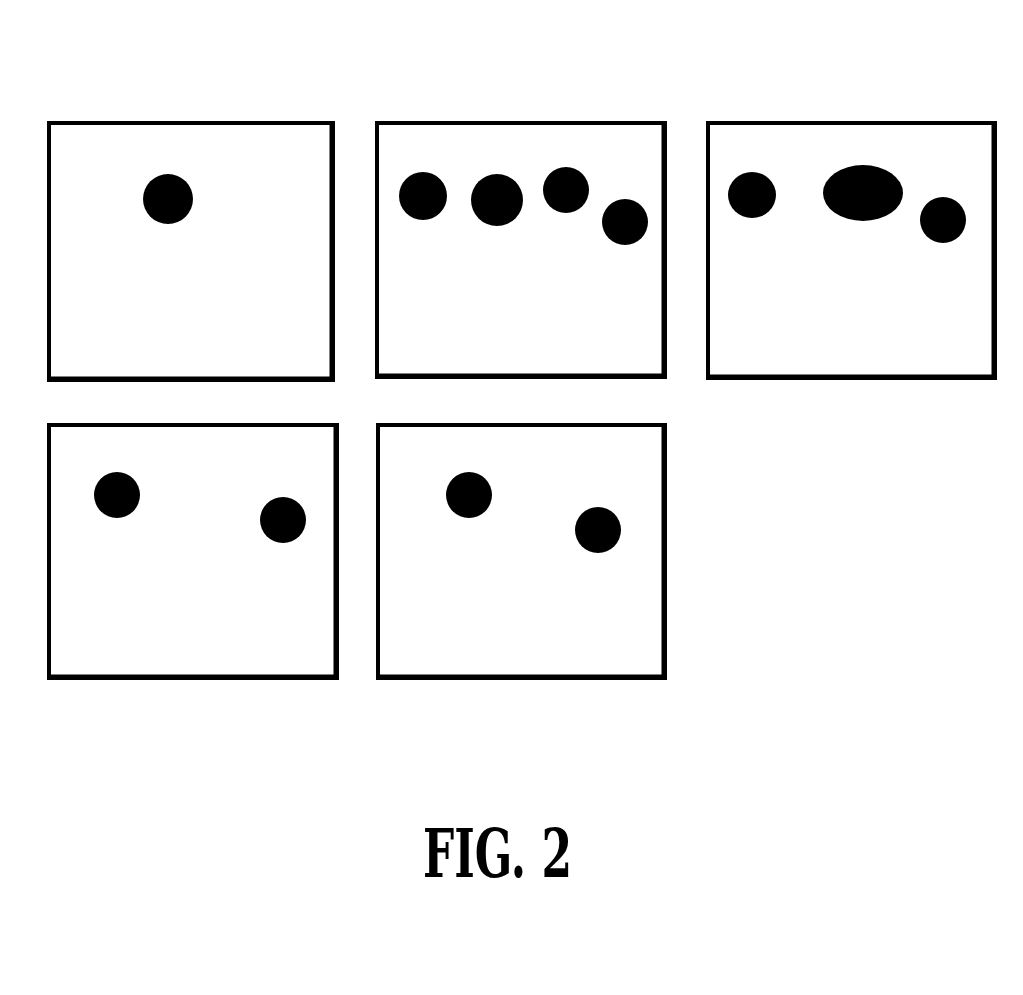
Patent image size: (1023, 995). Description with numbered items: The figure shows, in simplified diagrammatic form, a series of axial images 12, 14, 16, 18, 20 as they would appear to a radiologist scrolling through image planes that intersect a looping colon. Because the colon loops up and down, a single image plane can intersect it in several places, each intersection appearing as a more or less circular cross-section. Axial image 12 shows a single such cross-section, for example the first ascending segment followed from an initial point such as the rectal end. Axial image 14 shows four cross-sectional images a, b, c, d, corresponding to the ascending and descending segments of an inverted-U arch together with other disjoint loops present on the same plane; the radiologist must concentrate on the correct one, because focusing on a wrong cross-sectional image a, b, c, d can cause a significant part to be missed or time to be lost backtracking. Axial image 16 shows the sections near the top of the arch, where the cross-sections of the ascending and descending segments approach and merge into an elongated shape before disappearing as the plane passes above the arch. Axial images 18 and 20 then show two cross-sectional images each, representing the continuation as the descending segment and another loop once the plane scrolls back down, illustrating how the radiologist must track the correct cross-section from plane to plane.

The axial image 12 is at (223, 155).
The axial image 14 is at (521, 205).
The axial image 16 is at (850, 142).
The axial image 18 is at (192, 643).
The axial image 20 is at (490, 657).
The cross-sectional image a is at (409, 210).
The cross-sectional image b is at (470, 205).
The cross-sectional image c is at (543, 200).
The cross-sectional image d is at (635, 243).